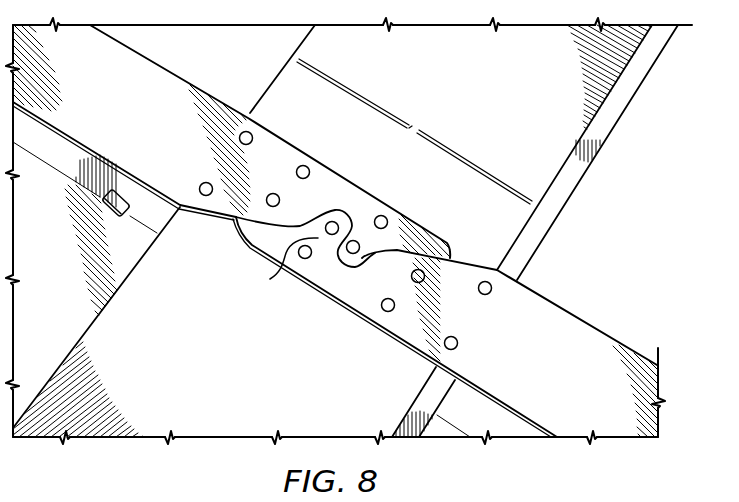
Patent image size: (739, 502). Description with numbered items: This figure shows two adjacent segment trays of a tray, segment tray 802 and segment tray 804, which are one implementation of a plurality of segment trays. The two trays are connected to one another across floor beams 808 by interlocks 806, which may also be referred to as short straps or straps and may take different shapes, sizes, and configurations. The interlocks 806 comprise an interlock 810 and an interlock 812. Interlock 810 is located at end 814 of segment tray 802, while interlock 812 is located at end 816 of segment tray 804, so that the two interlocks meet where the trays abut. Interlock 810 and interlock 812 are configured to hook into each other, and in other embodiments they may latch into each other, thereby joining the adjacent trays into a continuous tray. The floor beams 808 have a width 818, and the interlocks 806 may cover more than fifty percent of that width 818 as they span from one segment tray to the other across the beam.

The segment tray 802 is at (137, 67).
The segment tray 804 is at (594, 338).
The interlocks 806 is at (270, 279).
The floor beams 808 is at (280, 361).
The interlock 810 is at (331, 182).
The interlock 812 is at (469, 258).
The end 814 is at (245, 105).
The end 816 is at (531, 276).
The width 818 is at (414, 131).